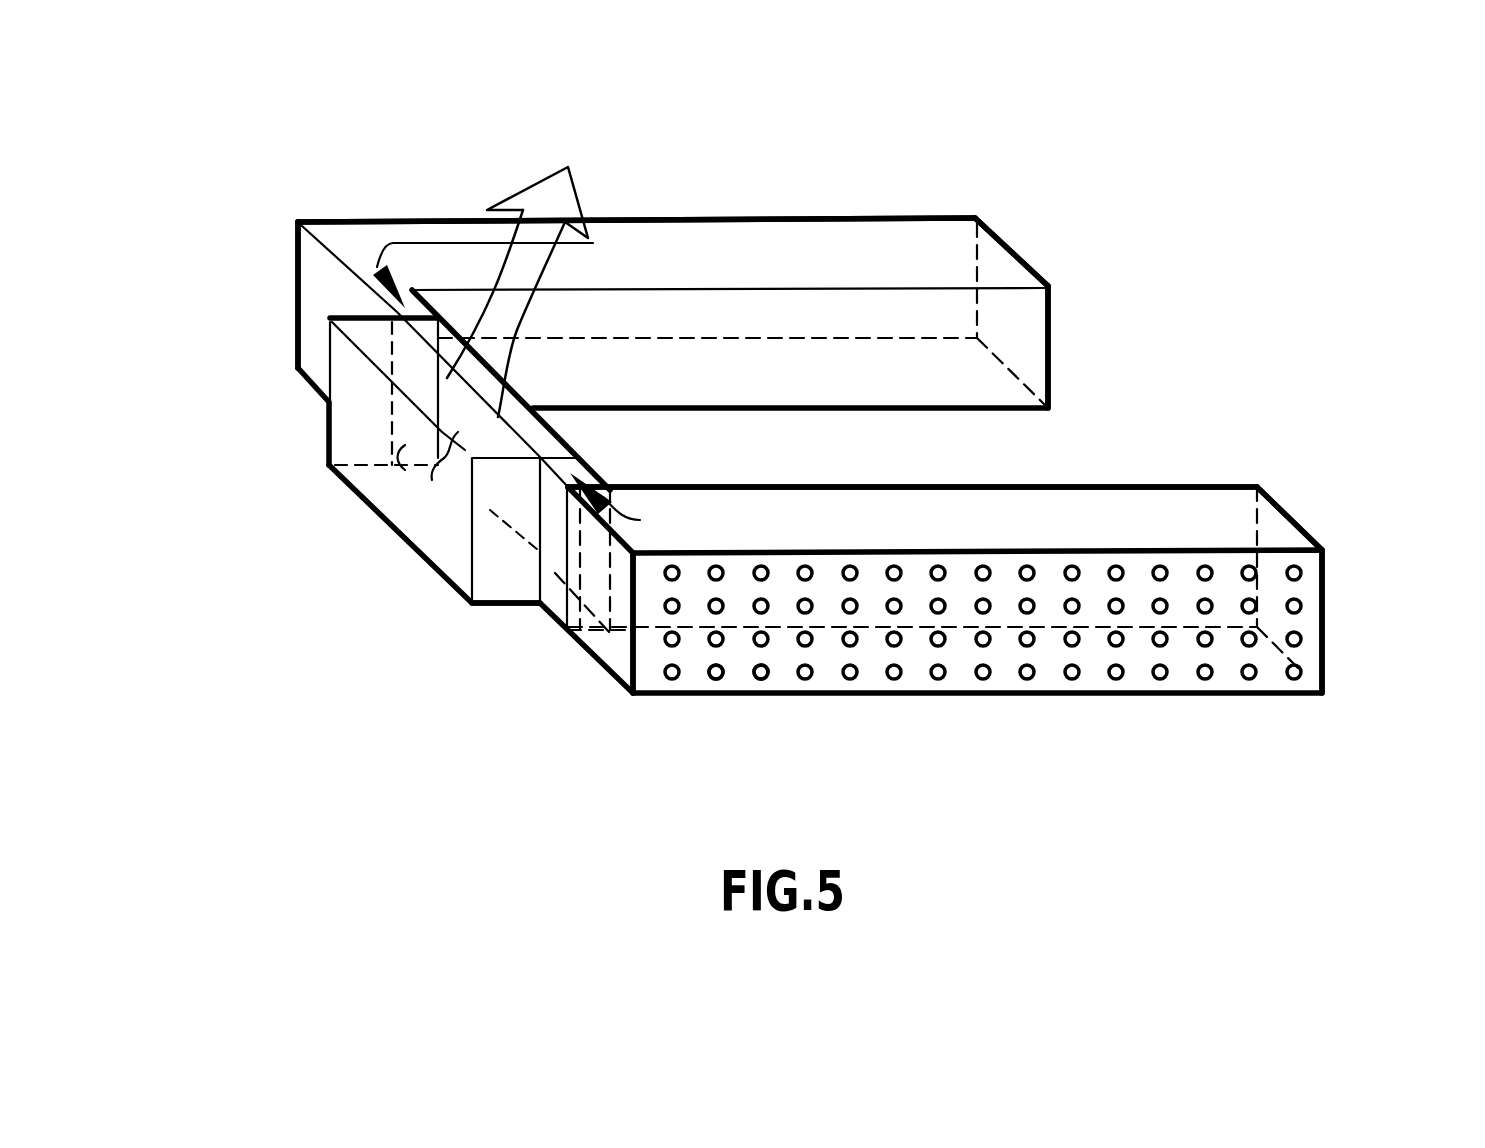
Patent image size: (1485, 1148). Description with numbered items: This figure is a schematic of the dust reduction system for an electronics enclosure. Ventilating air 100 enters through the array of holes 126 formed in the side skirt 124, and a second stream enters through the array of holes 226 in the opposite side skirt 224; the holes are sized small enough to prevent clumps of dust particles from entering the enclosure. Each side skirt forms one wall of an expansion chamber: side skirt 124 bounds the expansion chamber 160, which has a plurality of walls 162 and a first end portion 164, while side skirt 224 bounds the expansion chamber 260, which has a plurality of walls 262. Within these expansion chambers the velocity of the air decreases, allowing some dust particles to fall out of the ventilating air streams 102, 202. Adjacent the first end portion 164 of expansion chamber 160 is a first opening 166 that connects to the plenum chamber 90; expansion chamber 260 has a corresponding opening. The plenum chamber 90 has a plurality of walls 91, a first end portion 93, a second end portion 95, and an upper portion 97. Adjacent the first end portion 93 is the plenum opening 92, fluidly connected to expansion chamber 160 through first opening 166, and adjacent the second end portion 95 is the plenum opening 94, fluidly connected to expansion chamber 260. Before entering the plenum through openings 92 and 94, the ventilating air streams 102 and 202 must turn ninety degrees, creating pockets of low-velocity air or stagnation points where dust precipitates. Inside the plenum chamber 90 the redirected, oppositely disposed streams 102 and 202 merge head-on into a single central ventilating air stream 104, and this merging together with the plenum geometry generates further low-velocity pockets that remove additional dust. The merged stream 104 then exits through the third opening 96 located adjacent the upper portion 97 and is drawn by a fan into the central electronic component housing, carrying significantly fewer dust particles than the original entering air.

The plenum chamber 90 is at (404, 545).
The walls 91 is at (480, 480).
The plenum opening 92 is at (545, 612).
The first end portion 93 is at (512, 598).
The plenum opening 94 is at (408, 344).
The second end portion 95 is at (326, 343).
The third opening 96 is at (518, 414).
The upper portion 97 is at (447, 440).
The ventilating air 100 is at (855, 657).
The ventilating air stream 102 is at (640, 520).
The central ventilating air stream 104 is at (537, 196).
The side skirt 124 is at (1318, 610).
The array of holes 126 is at (724, 679).
The expansion chamber 160 is at (1237, 507).
The walls 162 is at (1273, 528).
The first end portion 164 is at (625, 670).
The first opening 166 is at (593, 627).
The ventilating air stream 202 is at (438, 243).
The side skirt 224 is at (796, 212).
The array of holes 226 is at (888, 208).
The expansion chamber 260 is at (1050, 373).
The walls 262 is at (1020, 302).